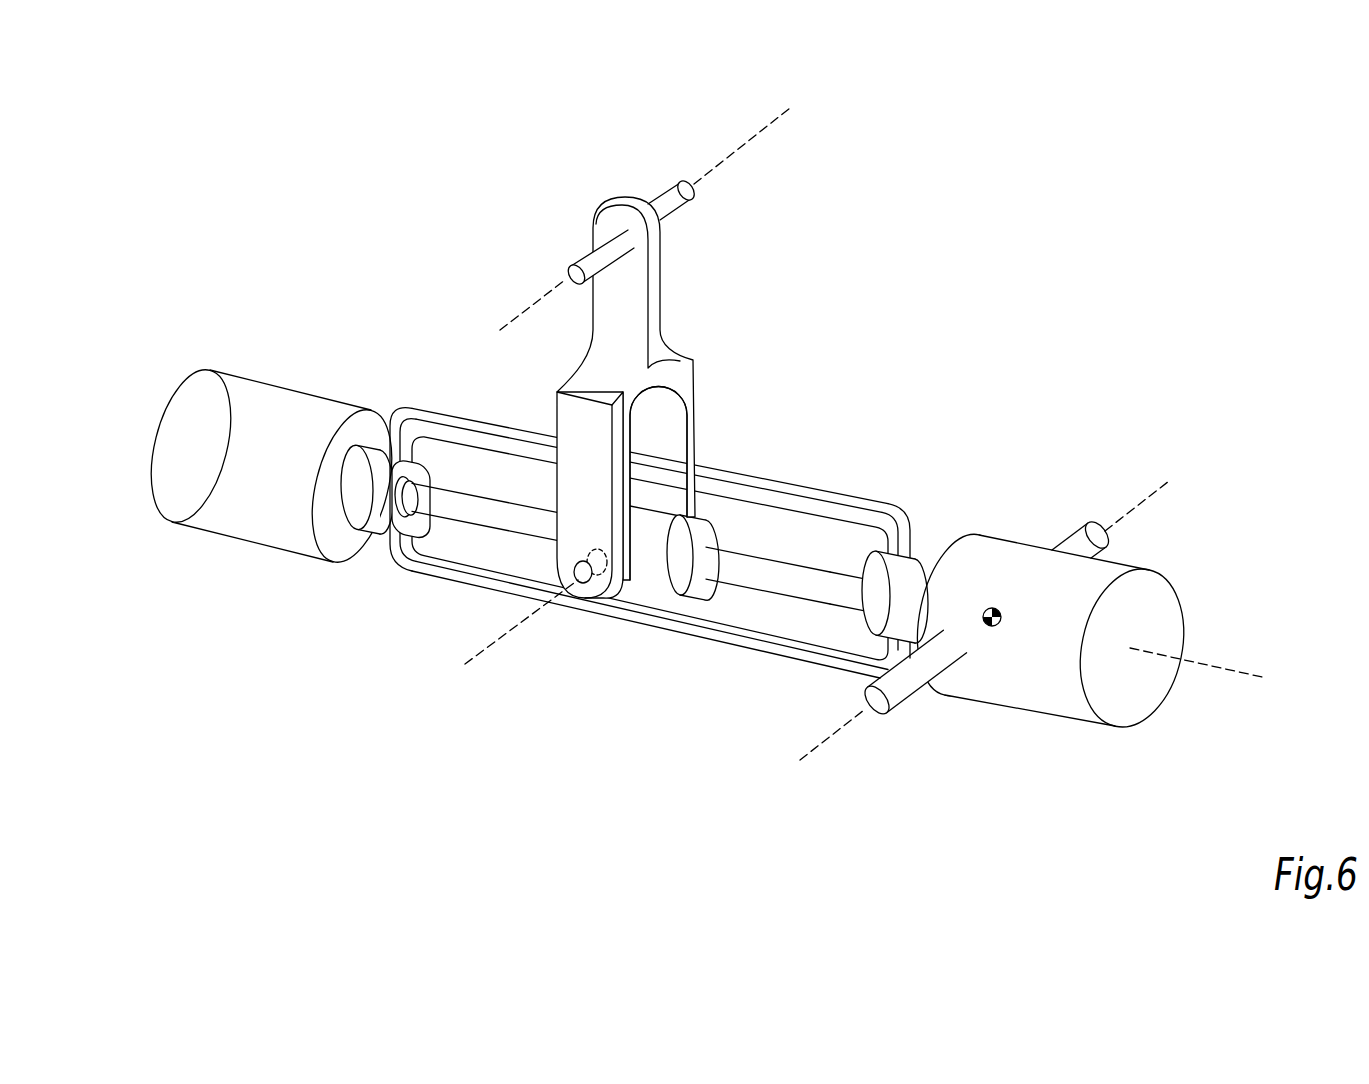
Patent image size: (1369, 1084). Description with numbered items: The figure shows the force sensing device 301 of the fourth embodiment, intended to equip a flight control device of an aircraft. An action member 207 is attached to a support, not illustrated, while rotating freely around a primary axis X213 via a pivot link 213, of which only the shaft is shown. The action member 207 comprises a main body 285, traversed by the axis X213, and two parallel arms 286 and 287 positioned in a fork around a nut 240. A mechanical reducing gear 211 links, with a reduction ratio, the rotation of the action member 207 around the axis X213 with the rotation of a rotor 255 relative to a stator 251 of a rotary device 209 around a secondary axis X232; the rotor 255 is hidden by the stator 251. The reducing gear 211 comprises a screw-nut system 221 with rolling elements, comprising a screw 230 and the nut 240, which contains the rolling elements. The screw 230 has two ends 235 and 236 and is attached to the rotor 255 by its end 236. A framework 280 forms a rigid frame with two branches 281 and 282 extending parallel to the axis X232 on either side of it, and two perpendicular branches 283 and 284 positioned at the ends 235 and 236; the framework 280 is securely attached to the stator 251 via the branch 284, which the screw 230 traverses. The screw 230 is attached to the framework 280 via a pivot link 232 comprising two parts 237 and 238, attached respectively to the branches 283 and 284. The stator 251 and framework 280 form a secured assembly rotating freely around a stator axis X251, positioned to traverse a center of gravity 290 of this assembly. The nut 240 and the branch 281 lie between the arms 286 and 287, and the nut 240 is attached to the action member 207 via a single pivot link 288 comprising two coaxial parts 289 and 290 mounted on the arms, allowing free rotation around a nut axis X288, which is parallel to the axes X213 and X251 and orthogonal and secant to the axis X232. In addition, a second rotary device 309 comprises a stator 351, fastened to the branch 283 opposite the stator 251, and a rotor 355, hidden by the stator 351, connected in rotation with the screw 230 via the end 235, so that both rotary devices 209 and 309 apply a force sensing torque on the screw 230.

The action member 207 is at (638, 357).
The rotary device 209 is at (1062, 668).
The mechanical reducing gear 211 is at (703, 445).
The pivot link 213 is at (665, 192).
The screw-nut system 221 is at (748, 620).
The screw 230 is at (778, 578).
The pivot link 232 is at (641, 567).
The end of the screw 235 is at (417, 493).
The end of the screw 236 is at (853, 583).
The part of the pivot link 237 is at (392, 520).
The part of the pivot link 238 is at (879, 632).
The nut 240 is at (660, 510).
The stator 251 is at (1093, 582).
The rotor 255 is at (913, 592).
The framework 280 is at (669, 469).
The branch 281 is at (490, 430).
The branch 282 is at (463, 566).
The branch 283 is at (380, 503).
The branch 284 is at (887, 510).
The main body 285 is at (610, 300).
The arm 286 is at (565, 478).
The arm 287 is at (700, 433).
The pivot link 288 is at (781, 587).
The part of the pivot link 289 is at (580, 604).
The part of the pivot link 290 is at (665, 582).
The force sensing device 301 is at (1056, 465).
The rotary device 309 is at (223, 441).
The stator 351 is at (205, 460).
The rotor 355 is at (353, 483).
The primary axis X213 is at (669, 208).
The secondary axis X232 is at (1056, 704).
The stator axis X251 is at (1160, 490).
The nut axis X288 is at (497, 638).